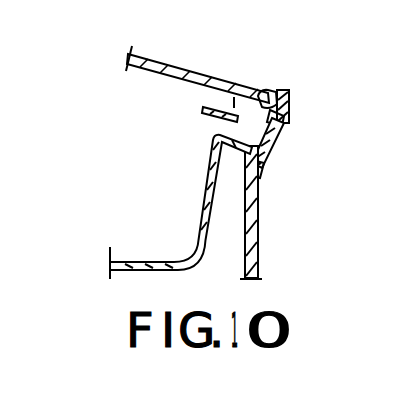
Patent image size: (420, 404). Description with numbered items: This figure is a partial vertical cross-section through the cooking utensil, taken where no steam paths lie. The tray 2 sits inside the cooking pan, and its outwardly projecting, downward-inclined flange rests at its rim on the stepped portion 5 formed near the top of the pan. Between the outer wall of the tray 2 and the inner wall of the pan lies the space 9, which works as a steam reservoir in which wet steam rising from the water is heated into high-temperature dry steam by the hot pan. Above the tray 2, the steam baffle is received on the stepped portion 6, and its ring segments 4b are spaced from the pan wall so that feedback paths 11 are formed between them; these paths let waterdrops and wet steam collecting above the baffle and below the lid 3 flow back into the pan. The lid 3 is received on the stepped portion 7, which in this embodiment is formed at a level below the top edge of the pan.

The tray 2 is at (206, 198).
The lid 3 is at (193, 51).
The ring segments 4b is at (250, 118).
The stepped portion 5 is at (258, 165).
The stepped portion 6 is at (268, 144).
The stepped portion 7 is at (276, 121).
The space 9 is at (255, 204).
The feedback paths 11 is at (260, 103).